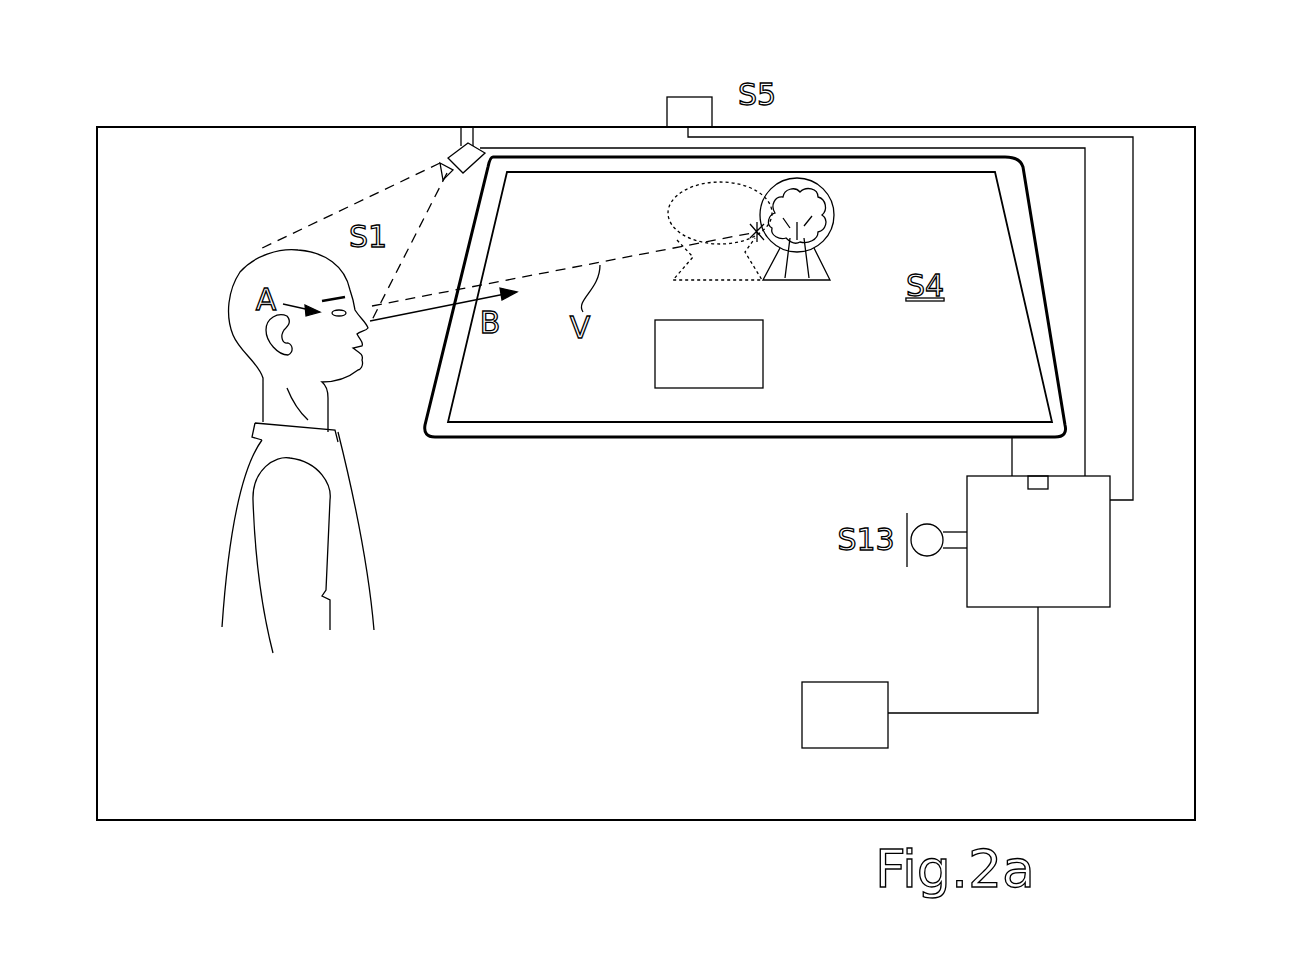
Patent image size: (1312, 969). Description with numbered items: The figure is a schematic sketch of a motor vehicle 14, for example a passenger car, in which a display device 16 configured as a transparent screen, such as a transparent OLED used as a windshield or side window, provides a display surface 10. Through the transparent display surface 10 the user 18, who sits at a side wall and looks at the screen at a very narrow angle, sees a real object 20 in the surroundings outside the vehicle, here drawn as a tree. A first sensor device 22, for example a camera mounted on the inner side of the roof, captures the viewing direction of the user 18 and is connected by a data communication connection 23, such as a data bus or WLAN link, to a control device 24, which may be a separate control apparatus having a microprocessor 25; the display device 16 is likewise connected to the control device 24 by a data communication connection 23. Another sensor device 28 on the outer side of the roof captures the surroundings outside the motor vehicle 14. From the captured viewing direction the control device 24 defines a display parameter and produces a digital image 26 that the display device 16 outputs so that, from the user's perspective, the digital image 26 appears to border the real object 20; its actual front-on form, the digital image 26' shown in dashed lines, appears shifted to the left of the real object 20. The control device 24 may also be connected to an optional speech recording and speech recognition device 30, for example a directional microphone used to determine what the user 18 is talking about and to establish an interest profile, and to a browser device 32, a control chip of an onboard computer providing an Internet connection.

The display surface 10 is at (910, 163).
The motor vehicle 14 is at (1195, 640).
The display device 16 is at (962, 157).
The user 18 is at (372, 553).
The real object 20 is at (797, 178).
The first sensor device 22 is at (477, 128).
The data communication connection 23 is at (1133, 325).
The control device 24 is at (1110, 540).
The microprocessor 25 is at (1045, 476).
The digital image 26 is at (786, 283).
The digital image in absolute visual form 26' is at (676, 231).
The sensor device 28 is at (690, 97).
The speech recording and speech recognition device 30 is at (953, 553).
The browser device 32 is at (802, 716).